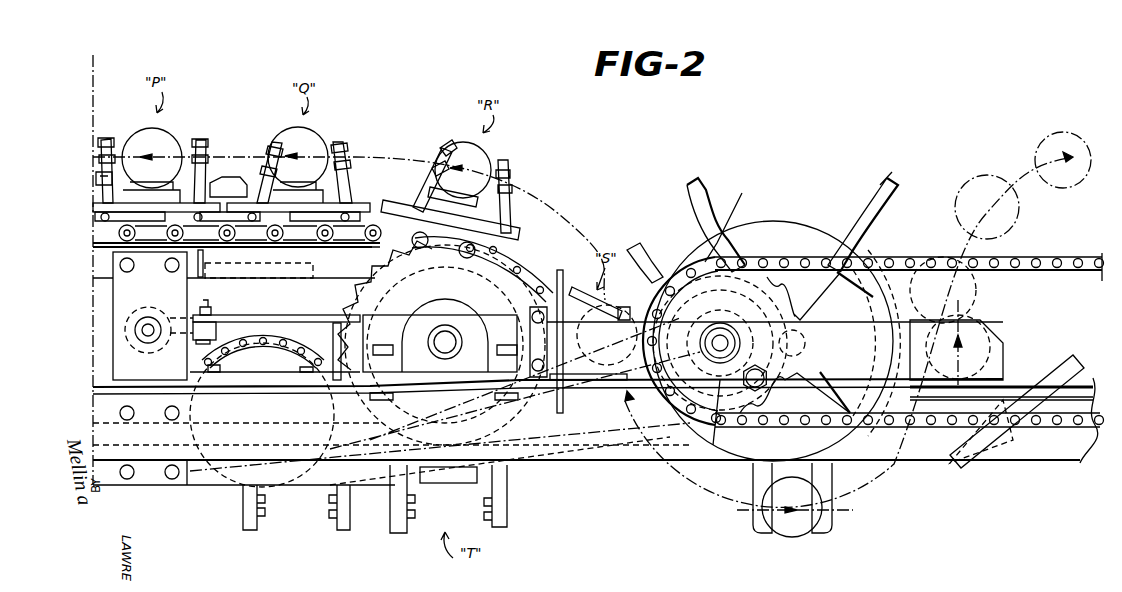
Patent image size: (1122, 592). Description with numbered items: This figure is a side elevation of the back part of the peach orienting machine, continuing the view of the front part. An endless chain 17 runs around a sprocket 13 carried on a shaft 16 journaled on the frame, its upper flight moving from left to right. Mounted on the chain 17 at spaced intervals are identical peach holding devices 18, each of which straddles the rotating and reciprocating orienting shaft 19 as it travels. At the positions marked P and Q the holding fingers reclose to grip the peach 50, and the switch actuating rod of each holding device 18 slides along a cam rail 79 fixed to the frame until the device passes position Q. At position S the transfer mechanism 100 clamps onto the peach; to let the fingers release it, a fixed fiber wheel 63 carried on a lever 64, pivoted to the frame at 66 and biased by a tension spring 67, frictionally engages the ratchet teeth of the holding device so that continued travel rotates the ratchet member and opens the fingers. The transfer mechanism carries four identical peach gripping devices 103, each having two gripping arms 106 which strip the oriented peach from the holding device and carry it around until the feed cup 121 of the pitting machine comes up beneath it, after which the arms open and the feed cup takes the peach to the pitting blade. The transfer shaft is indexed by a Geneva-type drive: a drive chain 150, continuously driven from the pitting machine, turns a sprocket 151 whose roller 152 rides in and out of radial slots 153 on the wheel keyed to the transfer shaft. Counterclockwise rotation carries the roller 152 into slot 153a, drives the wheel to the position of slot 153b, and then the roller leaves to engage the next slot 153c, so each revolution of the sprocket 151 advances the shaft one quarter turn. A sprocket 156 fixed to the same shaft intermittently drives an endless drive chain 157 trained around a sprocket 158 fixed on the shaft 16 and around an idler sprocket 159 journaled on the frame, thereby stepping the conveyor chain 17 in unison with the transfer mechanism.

The sprocket 13 is at (517, 260).
The shaft 16 is at (434, 345).
The endless chain 17 is at (380, 203).
The peach holding device 18 is at (214, 143).
The orienting shaft 19 is at (96, 179).
The peach 50 is at (162, 136).
The fiber wheel 63 is at (558, 280).
The lever 64 is at (263, 314).
The pivot 66 is at (208, 307).
The tension spring 67 is at (334, 350).
The cam rail 79 is at (226, 181).
The transfer mechanism 100 is at (626, 197).
The peach gripping device 103 is at (773, 320).
The gripping arm 106 is at (702, 192).
The feed cup 121 is at (1008, 463).
The drive chain 150 is at (1003, 263).
The sprocket 151 is at (692, 273).
The roller 152 is at (776, 343).
The radial slot 153 is at (850, 413).
The radial slot 153a is at (740, 220).
The radial slot 153b is at (713, 445).
The radial slot 153c is at (871, 289).
The sprocket 156 is at (989, 381).
The endless drive chain 157 is at (613, 450).
The sprocket 158 is at (470, 433).
The idler sprocket 159 is at (277, 340).